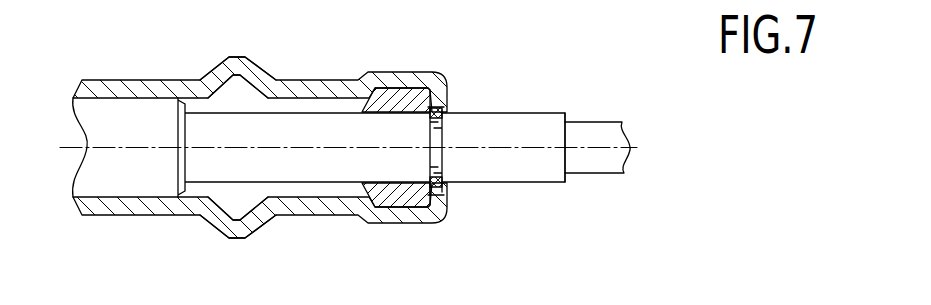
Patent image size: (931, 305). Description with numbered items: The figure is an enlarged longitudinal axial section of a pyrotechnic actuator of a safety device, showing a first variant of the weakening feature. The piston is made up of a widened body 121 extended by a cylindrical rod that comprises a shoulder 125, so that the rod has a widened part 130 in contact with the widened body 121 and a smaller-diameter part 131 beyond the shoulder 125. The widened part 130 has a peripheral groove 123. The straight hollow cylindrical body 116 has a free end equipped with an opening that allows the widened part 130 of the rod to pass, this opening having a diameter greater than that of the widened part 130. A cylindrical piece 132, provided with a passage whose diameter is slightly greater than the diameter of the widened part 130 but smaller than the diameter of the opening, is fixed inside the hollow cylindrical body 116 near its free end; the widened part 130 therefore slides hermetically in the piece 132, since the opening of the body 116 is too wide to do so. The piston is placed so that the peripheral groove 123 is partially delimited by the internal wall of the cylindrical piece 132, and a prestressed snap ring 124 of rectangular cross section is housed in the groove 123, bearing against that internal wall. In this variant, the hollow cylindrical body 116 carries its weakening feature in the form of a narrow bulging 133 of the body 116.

The straight hollow cylindrical body 116 is at (128, 88).
The widened body 121 is at (127, 168).
The peripheral groove 123 is at (443, 170).
The prestressed snap ring 124 is at (438, 117).
The shoulder 125 is at (570, 138).
The widened part 130 is at (513, 165).
The smaller-diameter part 131 is at (592, 163).
The cylindrical piece 132 is at (413, 100).
The narrow bulging 133 is at (232, 68).